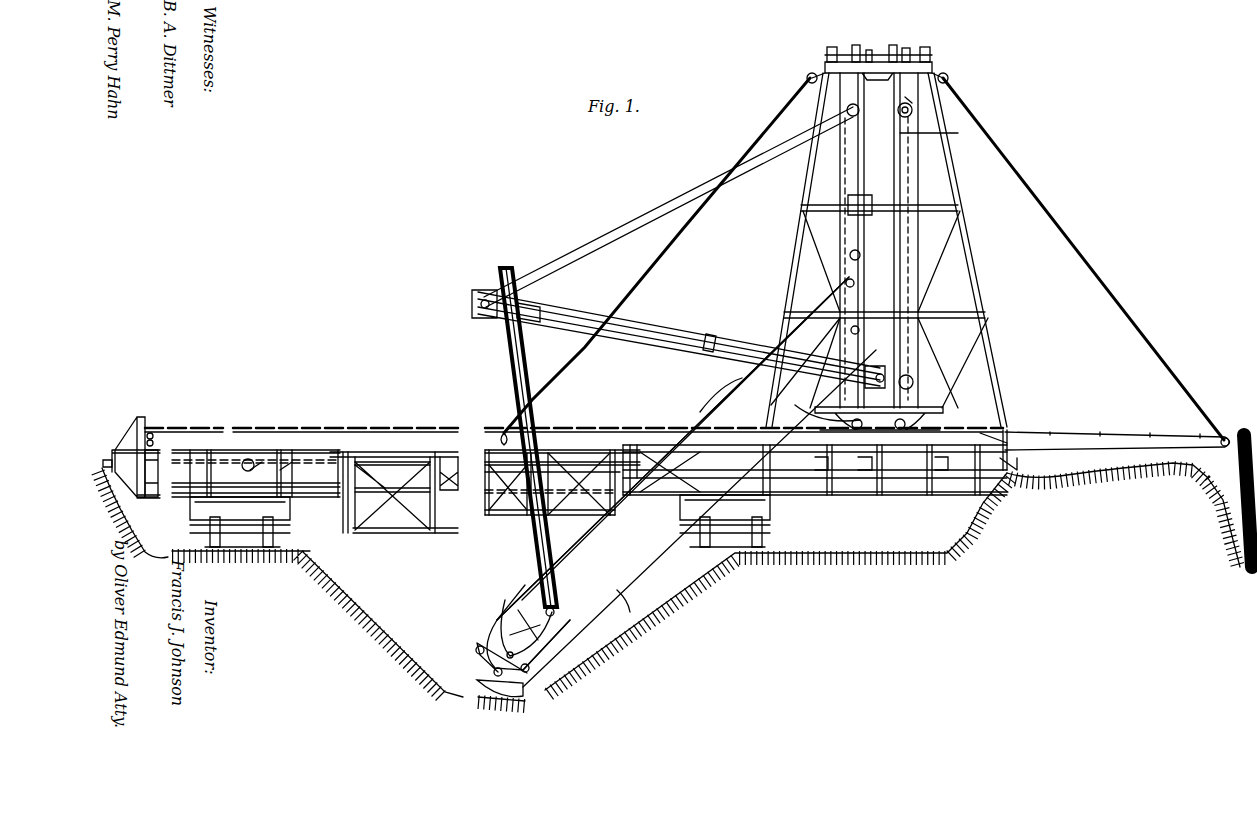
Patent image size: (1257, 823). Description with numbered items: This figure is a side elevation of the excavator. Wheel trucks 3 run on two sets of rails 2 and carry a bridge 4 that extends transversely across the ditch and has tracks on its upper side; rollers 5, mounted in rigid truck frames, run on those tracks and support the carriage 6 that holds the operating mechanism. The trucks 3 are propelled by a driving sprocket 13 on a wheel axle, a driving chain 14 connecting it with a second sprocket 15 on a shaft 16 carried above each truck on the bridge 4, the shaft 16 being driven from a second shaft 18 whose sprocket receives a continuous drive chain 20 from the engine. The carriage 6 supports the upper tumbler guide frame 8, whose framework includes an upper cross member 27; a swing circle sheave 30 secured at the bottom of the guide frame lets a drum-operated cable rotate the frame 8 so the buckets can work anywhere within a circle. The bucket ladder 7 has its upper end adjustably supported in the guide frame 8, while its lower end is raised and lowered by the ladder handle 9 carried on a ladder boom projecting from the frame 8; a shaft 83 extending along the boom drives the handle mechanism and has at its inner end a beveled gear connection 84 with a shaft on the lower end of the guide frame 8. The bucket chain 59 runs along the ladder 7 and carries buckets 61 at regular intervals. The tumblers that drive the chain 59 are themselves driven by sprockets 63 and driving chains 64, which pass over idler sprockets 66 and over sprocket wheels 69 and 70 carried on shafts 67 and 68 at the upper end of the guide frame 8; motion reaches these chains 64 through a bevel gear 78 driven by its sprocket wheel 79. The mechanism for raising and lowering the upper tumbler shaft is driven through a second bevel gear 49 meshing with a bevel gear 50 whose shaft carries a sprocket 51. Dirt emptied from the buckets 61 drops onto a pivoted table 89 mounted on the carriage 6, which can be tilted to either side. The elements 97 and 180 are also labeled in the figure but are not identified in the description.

The rails 2 is at (248, 556).
The wheel trucks 3 is at (286, 528).
The bridge 4 is at (405, 520).
The rollers 5 is at (822, 472).
The carriage 6 is at (952, 392).
The bucket ladder 7 is at (686, 482).
The upper tumbler guide frame 8 is at (886, 244).
The ladder handle 9 is at (518, 377).
The driving sprocket 13 is at (263, 533).
The driving chain 14 is at (213, 457).
The second sprocket 15 is at (287, 462).
The shaft 16 is at (258, 462).
The second shaft 18 is at (231, 470).
The continuous drive chain 20 is at (200, 430).
The upper cross member 27 is at (912, 384).
The swing circle sheave 30 is at (946, 412).
The second bevel gear 49 is at (870, 50).
The bevel gear 50 is at (895, 45).
The sprocket 51 is at (910, 50).
The bucket chain 59 is at (490, 652).
The buckets 61 is at (790, 325).
The sprockets 63 is at (846, 285).
The driving chains 64 is at (838, 150).
The idler sprockets 66 is at (860, 255).
The shaft 67 is at (846, 110).
The shaft 68 is at (912, 100).
The sprocket wheel 69 is at (840, 120).
The sprocket wheel 70 is at (912, 112).
The bevel gear 78 is at (857, 45).
The sprocket wheel 79 is at (835, 47).
The shaft 83 is at (708, 340).
The beveled gear connection 84 is at (885, 378).
The table 89 is at (858, 205).
The anchor boom 97 is at (1090, 432).
The pivot bearing 180 is at (524, 356).